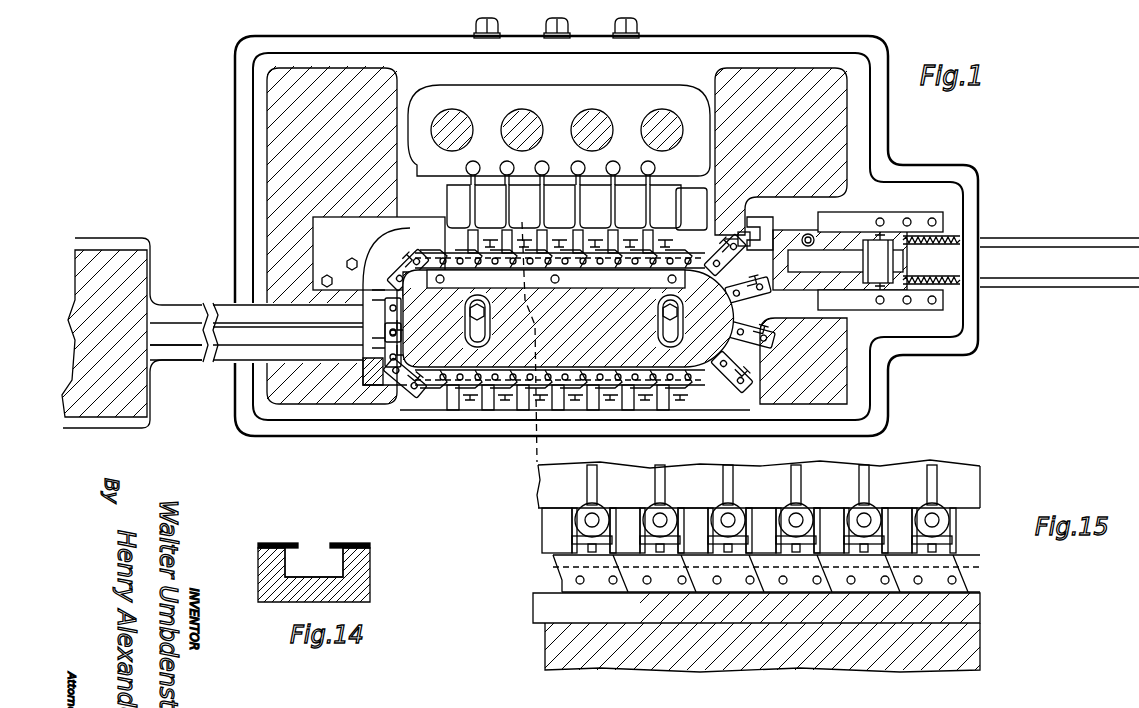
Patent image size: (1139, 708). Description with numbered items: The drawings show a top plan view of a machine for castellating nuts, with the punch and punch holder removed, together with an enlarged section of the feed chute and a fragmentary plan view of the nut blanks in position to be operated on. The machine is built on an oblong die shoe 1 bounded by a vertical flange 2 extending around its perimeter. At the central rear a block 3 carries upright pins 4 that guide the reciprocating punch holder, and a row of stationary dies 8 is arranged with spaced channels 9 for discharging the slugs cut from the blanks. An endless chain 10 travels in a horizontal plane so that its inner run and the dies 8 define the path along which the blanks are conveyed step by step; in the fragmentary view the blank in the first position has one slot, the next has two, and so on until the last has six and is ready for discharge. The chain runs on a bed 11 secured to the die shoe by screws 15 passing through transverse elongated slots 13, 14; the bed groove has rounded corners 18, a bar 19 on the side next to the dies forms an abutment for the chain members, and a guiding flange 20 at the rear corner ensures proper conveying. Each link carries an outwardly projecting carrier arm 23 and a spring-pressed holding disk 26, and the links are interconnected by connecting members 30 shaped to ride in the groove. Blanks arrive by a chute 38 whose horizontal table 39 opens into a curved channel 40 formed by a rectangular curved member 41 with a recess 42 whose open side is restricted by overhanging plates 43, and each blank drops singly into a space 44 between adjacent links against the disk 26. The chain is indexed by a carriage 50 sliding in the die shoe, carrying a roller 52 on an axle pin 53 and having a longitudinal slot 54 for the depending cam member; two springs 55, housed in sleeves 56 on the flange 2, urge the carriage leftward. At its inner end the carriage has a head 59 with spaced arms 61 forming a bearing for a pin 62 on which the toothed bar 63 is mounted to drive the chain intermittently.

In FIG. 1, the die shoe 1 is at (866, 180).
In FIG. 1, the vertical flange 2 is at (888, 350).
In FIG. 1, the block 3 is at (686, 108).
In FIG. 1, the upright pins 4 is at (450, 124).
In FIG. 1, the stationary dies 8 is at (462, 200).
In FIG. 1, the channels 9 is at (540, 214).
In FIG. 15, the channels 9 is at (866, 470).
In FIG. 1, the endless chain 10 is at (400, 317).
In FIG. 1, the bed 11 is at (520, 212).
In FIG. 1, the transverse elongated slot 13 is at (476, 340).
In FIG. 1, the transverse elongated slot 14 is at (668, 340).
In FIG. 1, the screws 15 is at (472, 318).
In FIG. 1, the rounded corners 18 is at (418, 388).
In FIG. 1, the bar 19 is at (560, 282).
In FIG. 15, the bar 19 is at (890, 626).
In FIG. 1, the guiding flange 20 is at (348, 228).
In FIG. 15, the carrier arms 23 is at (555, 524).
In FIG. 15, the disk 26 is at (580, 540).
In FIG. 15, the connecting members 30 is at (628, 586).
In FIG. 1, the chute 38 is at (196, 300).
In FIG. 1, the horizontal table 39 is at (110, 252).
In FIG. 1, the curved channel 40 is at (164, 338).
In FIG. 14, the curved channel 40 is at (306, 568).
In FIG. 14, the rectangular curved member 41 is at (372, 565).
In FIG. 14, the recess 42 is at (345, 555).
In FIG. 14, the overhanging plates 43 is at (266, 542).
In FIG. 1, the space 44 is at (370, 330).
In FIG. 1, the carriage 50 is at (836, 228).
In FIG. 1, the roller 52 is at (868, 262).
In FIG. 1, the axle pin 53 is at (882, 236).
In FIG. 1, the longitudinal slot 54 is at (845, 261).
In FIG. 1, the springs 55 is at (950, 236).
In FIG. 1, the sleeves 56 is at (1030, 246).
In FIG. 1, the head 59 is at (760, 215).
In FIG. 1, the spaced arms 61 is at (741, 263).
In FIG. 1, the pin 62 is at (735, 233).
In FIG. 1, the toothed bar 63 is at (688, 232).